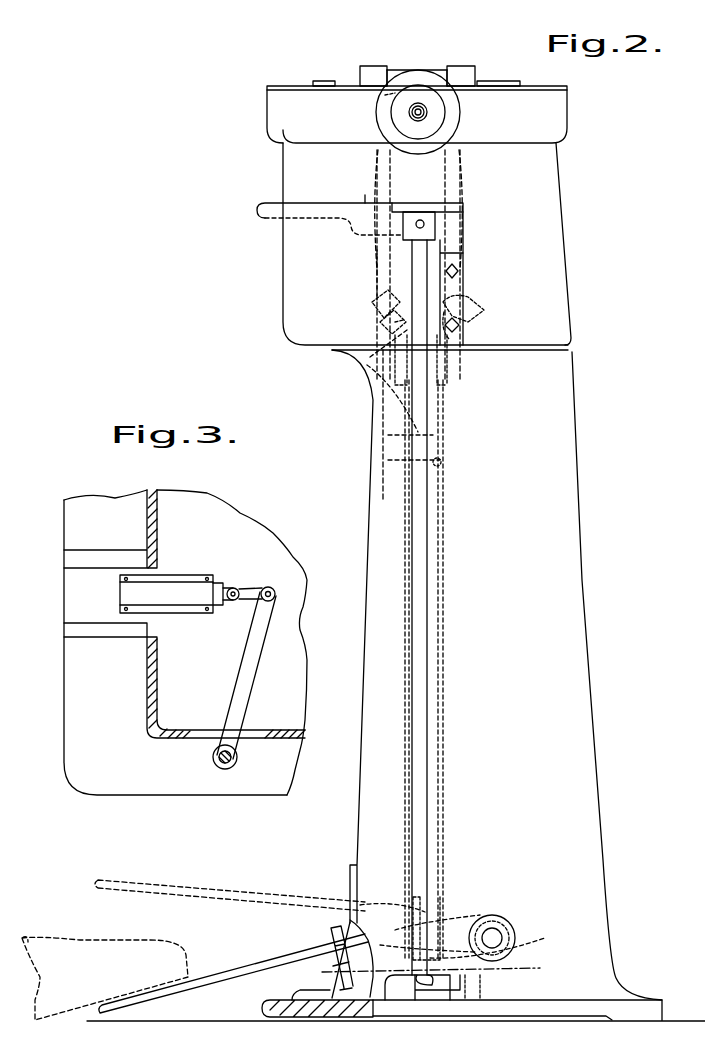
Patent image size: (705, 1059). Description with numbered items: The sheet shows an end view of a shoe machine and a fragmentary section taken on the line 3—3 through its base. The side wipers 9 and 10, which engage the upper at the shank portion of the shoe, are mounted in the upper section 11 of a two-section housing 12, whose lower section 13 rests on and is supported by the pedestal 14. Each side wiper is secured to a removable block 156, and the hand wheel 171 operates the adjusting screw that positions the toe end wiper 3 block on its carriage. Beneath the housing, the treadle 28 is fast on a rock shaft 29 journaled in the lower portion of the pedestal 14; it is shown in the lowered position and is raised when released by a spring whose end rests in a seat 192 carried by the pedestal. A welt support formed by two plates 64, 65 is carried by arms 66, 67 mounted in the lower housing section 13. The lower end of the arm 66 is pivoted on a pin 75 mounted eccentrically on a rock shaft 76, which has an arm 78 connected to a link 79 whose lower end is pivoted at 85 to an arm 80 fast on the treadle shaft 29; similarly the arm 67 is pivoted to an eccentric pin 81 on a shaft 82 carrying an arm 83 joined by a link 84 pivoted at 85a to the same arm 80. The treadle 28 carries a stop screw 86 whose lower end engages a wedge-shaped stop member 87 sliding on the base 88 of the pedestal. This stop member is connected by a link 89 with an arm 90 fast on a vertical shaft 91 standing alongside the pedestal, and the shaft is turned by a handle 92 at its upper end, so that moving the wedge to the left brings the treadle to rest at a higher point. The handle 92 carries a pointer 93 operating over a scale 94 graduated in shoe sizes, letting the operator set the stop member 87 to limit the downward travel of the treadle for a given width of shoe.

In FIG. 2, the toe end wiper 3 is at (430, 973).
In FIG. 2, the side wiper 9 is at (440, 66).
In FIG. 2, the side wiper 10 is at (400, 72).
In FIG. 2, the upper housing section 11 is at (558, 108).
In FIG. 3, the upper housing section 11 is at (150, 673).
In FIG. 2, the two-section housing 12 is at (558, 155).
In FIG. 2, the lower housing section 13 is at (550, 228).
In FIG. 2, the pedestal 14 is at (563, 733).
In FIG. 2, the treadle 28 is at (230, 893).
In FIG. 2, the treadle shaft 29 is at (496, 933).
In FIG. 2, the welt-supporting plate 64 is at (427, 110).
In FIG. 2, the welt-supporting plate 65 is at (384, 96).
In FIG. 2, the welt-support arm 66 is at (462, 182).
In FIG. 2, the welt-support arm 67 is at (376, 257).
In FIG. 2, the eccentric pin 75 is at (480, 302).
In FIG. 2, the rock shaft 76 is at (470, 324).
In FIG. 2, the arm 78 is at (462, 280).
In FIG. 2, the link 79 is at (445, 636).
In FIG. 2, the arm 80 is at (442, 928).
In FIG. 2, the eccentric pin 81 is at (372, 302).
In FIG. 2, the shaft 82 is at (380, 325).
In FIG. 2, the arm 83 is at (372, 356).
In FIG. 2, the link 84 is at (405, 630).
In FIG. 2, the pivot connection 85 is at (470, 963).
In FIG. 2, the pivot connection 85a is at (413, 942).
In FIG. 2, the stop screw 86 is at (330, 942).
In FIG. 2, the wedge-shaped stop member 87 is at (403, 990).
In FIG. 3, the wedge-shaped stop member 87 is at (172, 590).
In FIG. 2, the pedestal base 88 is at (347, 1010).
In FIG. 3, the pedestal base 88 is at (73, 593).
In FIG. 3, the link 89 is at (245, 590).
In FIG. 2, the arm 90 is at (455, 990).
In FIG. 3, the arm 90 is at (238, 654).
In FIG. 2, the vertical shaft 91 is at (426, 600).
In FIG. 3, the vertical shaft 91 is at (225, 770).
In FIG. 2, the handle 92 is at (300, 221).
In FIG. 2, the pointer 93 is at (364, 196).
In FIG. 2, the scale 94 is at (422, 190).
In FIG. 2, the wiper block 156 is at (362, 72).
In FIG. 2, the hand wheel 171 is at (417, 72).
In FIG. 2, the spring seat 192 is at (442, 462).